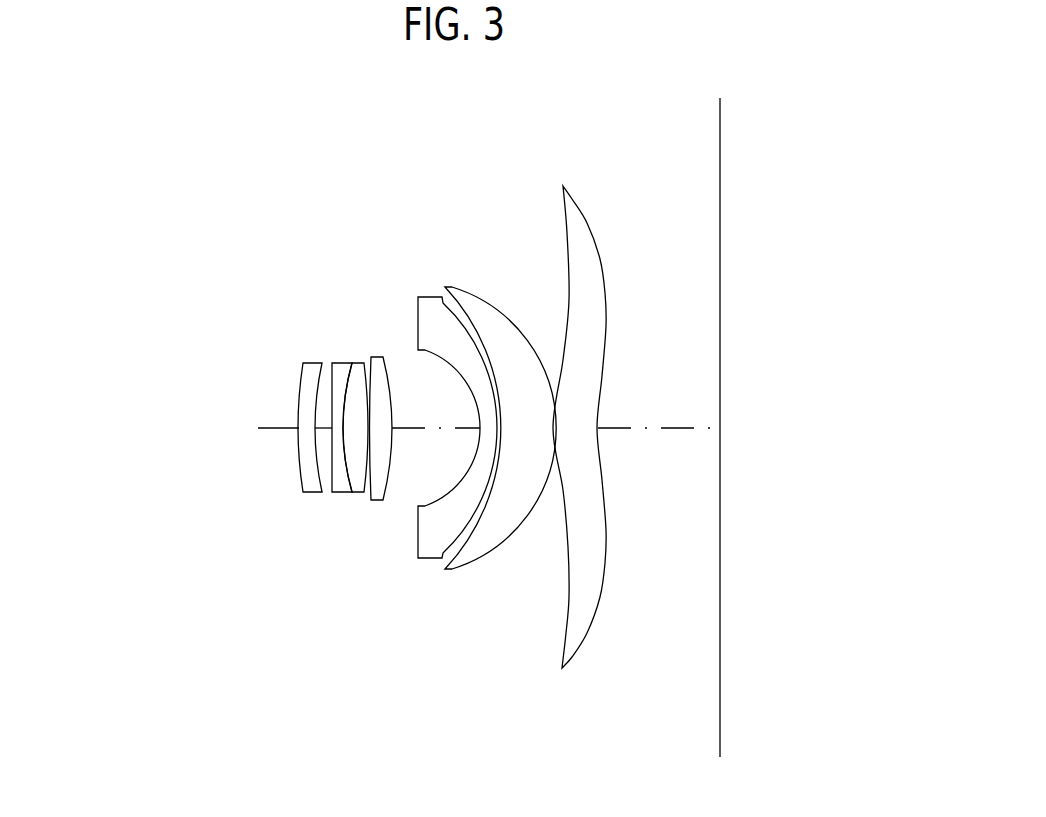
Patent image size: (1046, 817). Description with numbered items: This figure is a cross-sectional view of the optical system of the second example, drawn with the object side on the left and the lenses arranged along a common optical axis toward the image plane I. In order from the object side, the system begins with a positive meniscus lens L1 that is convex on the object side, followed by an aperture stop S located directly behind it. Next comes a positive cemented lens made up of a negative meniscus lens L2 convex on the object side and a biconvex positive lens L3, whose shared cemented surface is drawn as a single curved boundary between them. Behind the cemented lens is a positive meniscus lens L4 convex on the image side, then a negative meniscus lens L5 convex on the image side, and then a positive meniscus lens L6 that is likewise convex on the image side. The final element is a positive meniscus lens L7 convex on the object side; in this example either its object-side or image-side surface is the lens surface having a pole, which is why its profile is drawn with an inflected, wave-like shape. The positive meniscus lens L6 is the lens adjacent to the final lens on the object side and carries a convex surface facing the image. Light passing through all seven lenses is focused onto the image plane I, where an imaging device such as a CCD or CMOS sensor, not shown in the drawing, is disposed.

The positive meniscus lens L1 is at (313, 362).
The negative meniscus lens L2 is at (352, 363).
The biconvex positive lens L3 is at (364, 363).
The positive meniscus lens L4 is at (384, 357).
The negative meniscus lens L5 is at (427, 297).
The positive meniscus lens L6 is at (470, 291).
The positive meniscus lens L7 is at (573, 197).
The aperture stop S is at (318, 487).
The image plane I is at (720, 745).